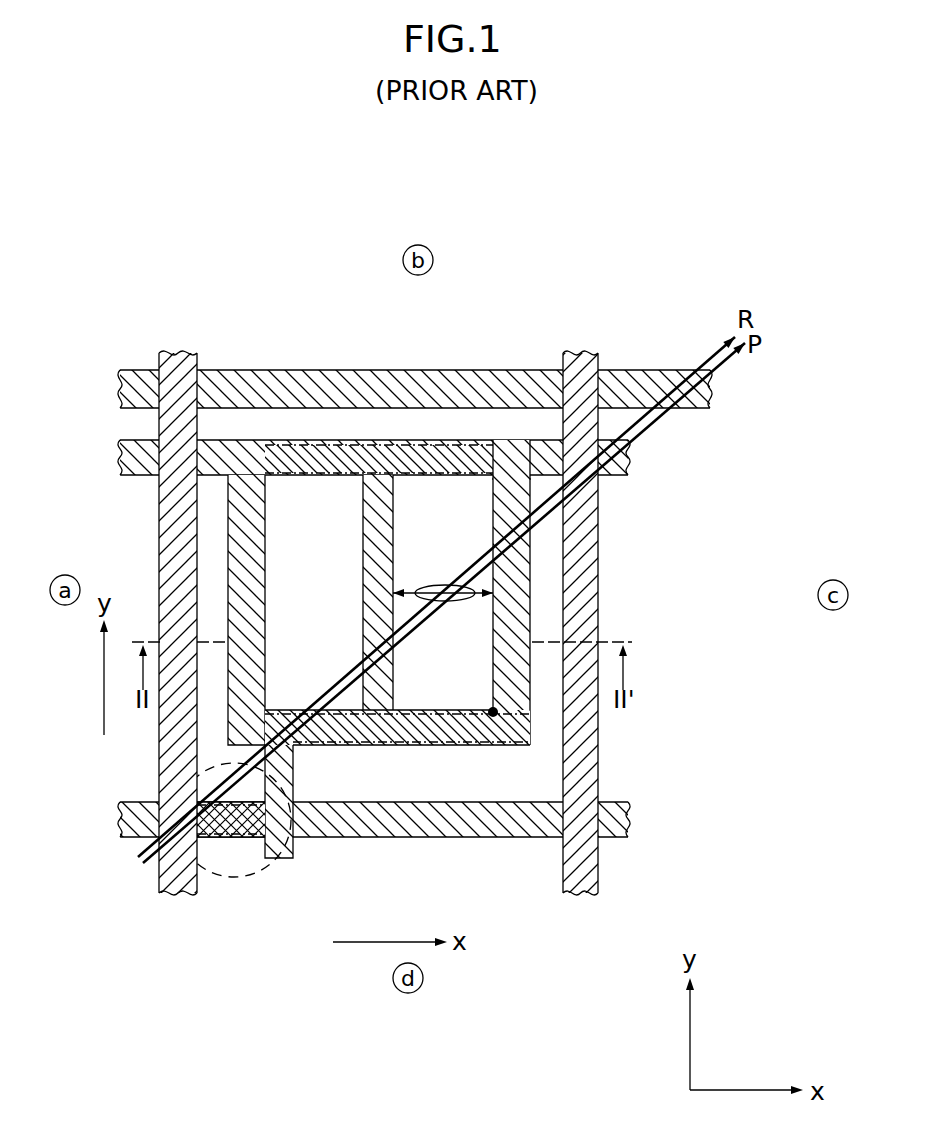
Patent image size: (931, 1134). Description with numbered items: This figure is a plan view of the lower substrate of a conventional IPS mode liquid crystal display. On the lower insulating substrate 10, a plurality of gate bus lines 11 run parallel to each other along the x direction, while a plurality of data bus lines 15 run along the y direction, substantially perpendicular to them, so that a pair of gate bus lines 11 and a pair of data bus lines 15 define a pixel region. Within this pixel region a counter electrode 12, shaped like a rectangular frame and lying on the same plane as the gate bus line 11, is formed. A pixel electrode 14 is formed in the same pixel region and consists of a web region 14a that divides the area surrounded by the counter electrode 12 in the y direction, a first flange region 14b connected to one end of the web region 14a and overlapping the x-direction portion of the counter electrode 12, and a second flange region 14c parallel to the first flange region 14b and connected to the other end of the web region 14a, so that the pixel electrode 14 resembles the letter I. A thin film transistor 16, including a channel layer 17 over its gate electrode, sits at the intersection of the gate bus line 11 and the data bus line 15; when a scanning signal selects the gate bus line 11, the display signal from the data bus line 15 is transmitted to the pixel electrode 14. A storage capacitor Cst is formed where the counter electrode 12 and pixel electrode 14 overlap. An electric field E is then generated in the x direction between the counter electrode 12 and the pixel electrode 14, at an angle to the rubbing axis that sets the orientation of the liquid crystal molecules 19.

The lower insulating substrate 10 is at (425, 898).
The gate bus line 11 is at (697, 392).
The counter electrode 12 is at (522, 470).
The pixel electrode 14 is at (519, 593).
The web region 14a is at (380, 685).
The first flange region 14b is at (532, 478).
The second flange region 14c is at (491, 728).
The data bus line 15 is at (178, 893).
The thin film transistor 16 is at (266, 870).
The channel layer 17 is at (233, 832).
The liquid crystal molecules 19 is at (440, 584).
The storage capacitor Cst is at (373, 458).
The electric field E is at (443, 611).